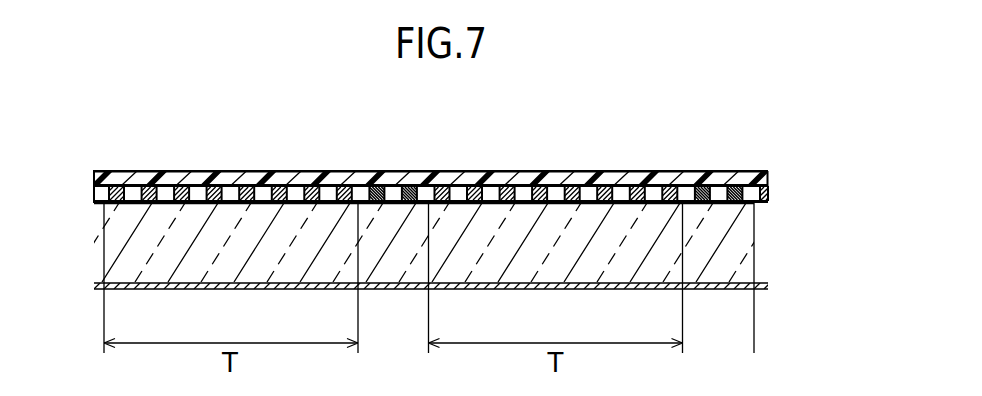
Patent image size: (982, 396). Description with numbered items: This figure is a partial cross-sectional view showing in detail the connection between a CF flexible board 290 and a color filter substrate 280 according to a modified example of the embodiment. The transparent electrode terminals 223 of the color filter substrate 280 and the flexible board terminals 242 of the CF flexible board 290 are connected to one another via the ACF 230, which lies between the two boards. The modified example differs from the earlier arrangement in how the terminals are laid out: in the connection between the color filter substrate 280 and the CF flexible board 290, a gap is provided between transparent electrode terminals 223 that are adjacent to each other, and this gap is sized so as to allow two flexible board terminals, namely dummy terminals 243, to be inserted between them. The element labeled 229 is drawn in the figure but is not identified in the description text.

The CF flexible board 290 is at (783, 184).
The color filter substrate 280 is at (764, 243).
The reflective layer 229 is at (765, 289).
The ACF 230 is at (491, 190).
The flexible board terminals 242 is at (446, 188).
The dummy terminals 243 is at (408, 188).
The transparent electrode terminals 223 is at (199, 206).